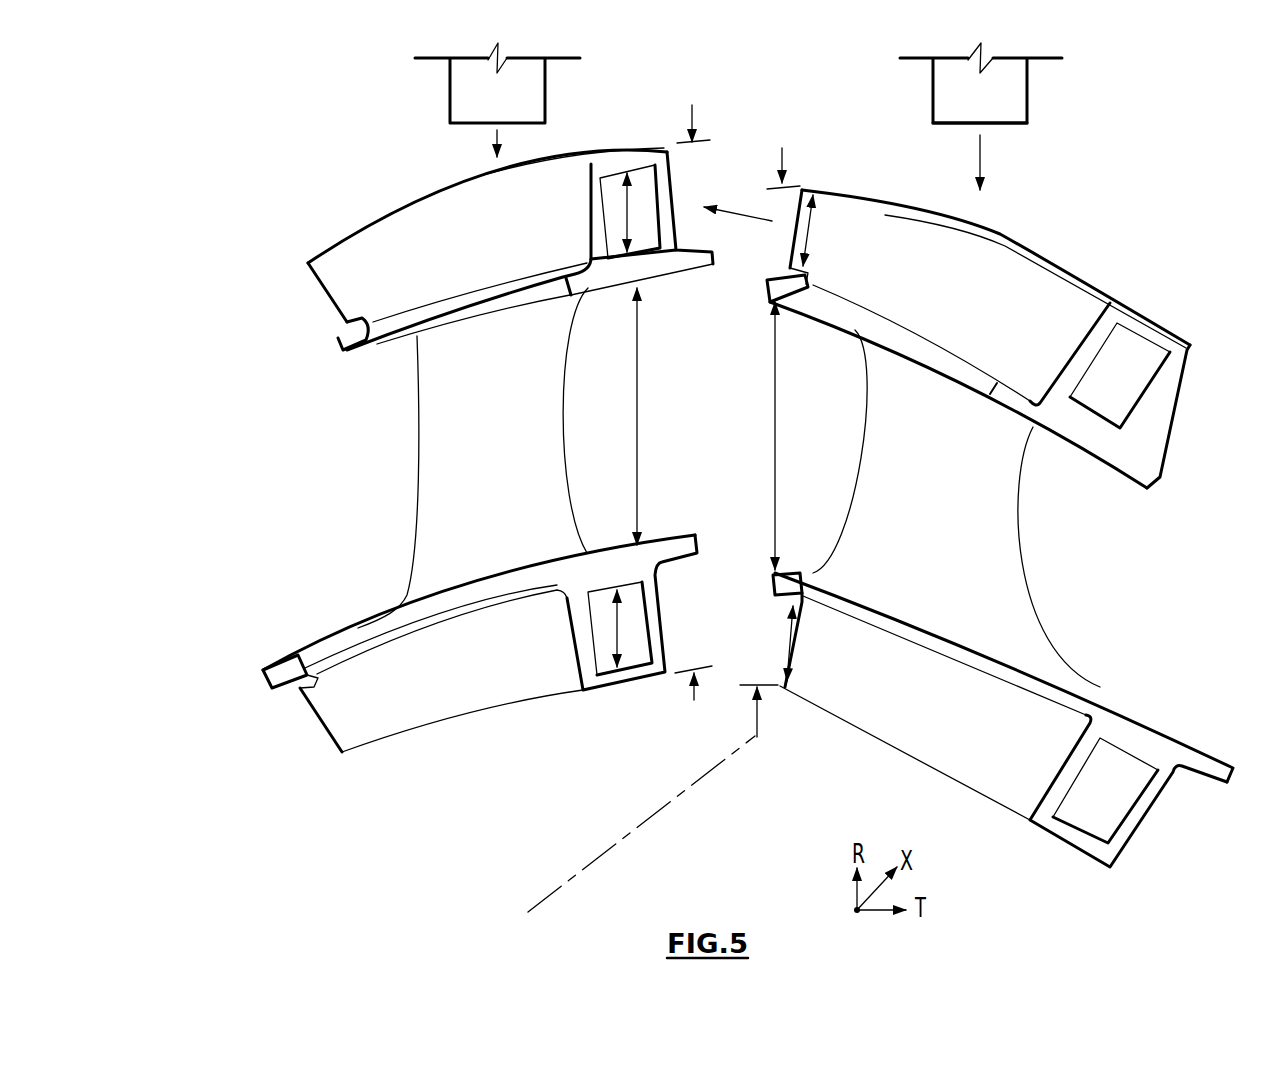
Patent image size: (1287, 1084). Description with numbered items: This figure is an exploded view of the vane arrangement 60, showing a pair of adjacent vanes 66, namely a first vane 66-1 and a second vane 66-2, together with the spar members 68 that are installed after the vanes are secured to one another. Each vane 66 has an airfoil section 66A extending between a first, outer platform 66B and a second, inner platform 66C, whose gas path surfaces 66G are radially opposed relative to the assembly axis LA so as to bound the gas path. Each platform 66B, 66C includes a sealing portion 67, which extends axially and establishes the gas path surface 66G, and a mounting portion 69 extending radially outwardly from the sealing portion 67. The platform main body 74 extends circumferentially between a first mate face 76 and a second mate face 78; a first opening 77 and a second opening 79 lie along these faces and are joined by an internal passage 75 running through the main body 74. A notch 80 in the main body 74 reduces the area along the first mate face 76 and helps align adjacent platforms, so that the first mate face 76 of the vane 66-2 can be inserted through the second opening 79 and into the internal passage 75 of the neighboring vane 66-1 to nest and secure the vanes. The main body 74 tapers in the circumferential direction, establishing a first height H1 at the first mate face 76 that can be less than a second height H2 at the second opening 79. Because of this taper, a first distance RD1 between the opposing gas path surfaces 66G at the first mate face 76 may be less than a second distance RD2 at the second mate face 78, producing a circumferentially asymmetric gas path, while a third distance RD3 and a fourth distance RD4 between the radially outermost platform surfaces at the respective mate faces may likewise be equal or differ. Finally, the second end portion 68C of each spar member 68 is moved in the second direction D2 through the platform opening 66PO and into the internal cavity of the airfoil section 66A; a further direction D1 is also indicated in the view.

The gas turbine engine section / vane assembly 60 is at (216, 129).
The vane 66 is at (249, 201).
The first vane 66-1 is at (345, 236).
The second vane 66-2 is at (1154, 291).
The airfoil section 66A is at (558, 480).
The first platform 66B is at (320, 266).
The second platform 66C is at (470, 125).
The gas path surface 66G is at (620, 293).
The platform opening 66PO is at (513, 168).
The sealing portion 67 is at (379, 348).
The spar member 68 is at (546, 90).
The second end portion 68C is at (1002, 125).
The mounting portion 69 is at (387, 233).
The main body 74 is at (330, 273).
The internal passage 75 is at (655, 194).
The first mate face 76 is at (337, 317).
The first opening 77 is at (318, 307).
The second mate face 78 is at (669, 152).
The second opening 79 is at (650, 227).
The notch 80 is at (341, 350).
The distance D1 is at (731, 221).
The second direction D2 is at (496, 138).
The first height H1 is at (813, 230).
The second height H2 is at (636, 220).
The first distance RD1 is at (775, 436).
The second distance RD2 is at (640, 410).
The third distance RD3 is at (758, 712).
The fourth distance RD4 is at (694, 700).
The assembly axis LA is at (583, 866).